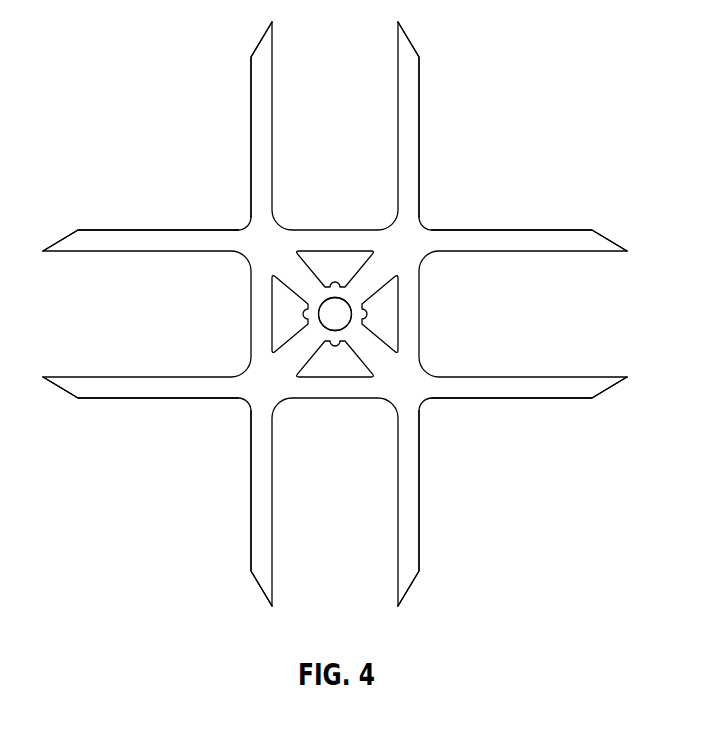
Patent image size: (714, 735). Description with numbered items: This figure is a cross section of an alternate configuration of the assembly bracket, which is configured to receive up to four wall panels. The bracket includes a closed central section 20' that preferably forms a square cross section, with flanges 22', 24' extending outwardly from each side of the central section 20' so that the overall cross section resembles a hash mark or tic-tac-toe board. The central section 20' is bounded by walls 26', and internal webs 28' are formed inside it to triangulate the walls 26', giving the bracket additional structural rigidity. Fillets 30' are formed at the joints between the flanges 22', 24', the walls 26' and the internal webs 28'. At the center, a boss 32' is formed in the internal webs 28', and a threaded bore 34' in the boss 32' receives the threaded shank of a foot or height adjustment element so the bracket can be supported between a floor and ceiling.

The central section 20' is at (335, 314).
The flange 22' is at (335, 314).
The flange 24' is at (335, 314).
The wall 26' is at (335, 314).
The internal web 28' is at (338, 314).
The fillet 30' is at (331, 317).
The boss 32' is at (352, 259).
The threaded bore 34' is at (357, 376).